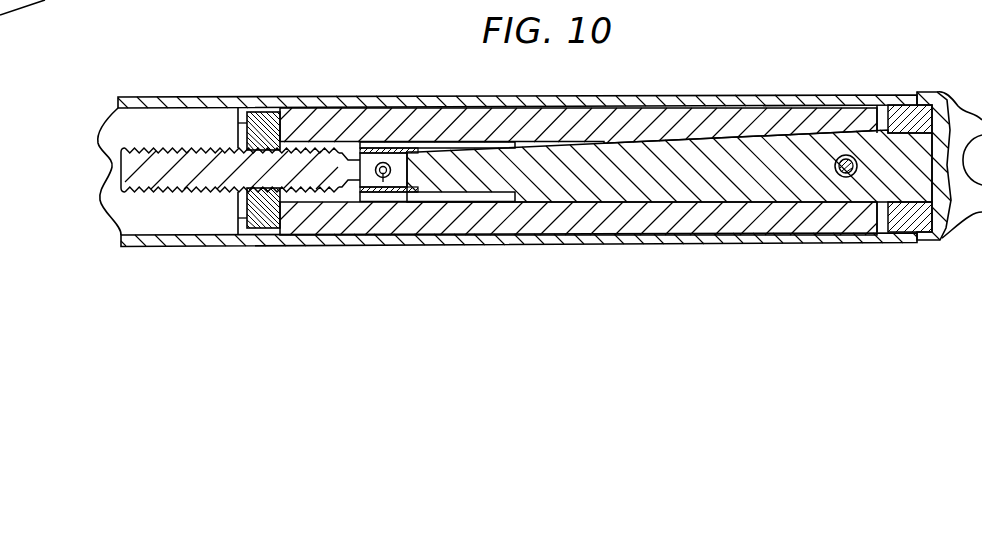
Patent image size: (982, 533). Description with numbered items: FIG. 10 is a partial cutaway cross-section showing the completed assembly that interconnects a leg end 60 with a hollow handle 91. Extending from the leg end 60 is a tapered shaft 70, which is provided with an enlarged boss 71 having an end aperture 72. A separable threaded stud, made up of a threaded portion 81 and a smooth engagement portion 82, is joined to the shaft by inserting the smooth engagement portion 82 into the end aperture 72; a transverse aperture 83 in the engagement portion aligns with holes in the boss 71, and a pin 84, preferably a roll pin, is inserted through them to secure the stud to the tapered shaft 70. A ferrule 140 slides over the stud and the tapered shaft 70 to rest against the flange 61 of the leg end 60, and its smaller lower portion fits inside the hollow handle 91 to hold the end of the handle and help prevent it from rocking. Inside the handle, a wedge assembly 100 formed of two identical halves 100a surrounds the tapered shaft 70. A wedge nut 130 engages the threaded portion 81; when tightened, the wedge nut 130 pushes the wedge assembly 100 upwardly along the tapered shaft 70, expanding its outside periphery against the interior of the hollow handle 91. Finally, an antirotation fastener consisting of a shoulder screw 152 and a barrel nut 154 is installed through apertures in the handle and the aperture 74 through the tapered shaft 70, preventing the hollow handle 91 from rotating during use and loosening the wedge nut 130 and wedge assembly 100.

The wedge assembly 100 is at (75, 0).
The half of the wedge assembly 100a is at (581, 106).
The hollow handle 91 is at (157, 122).
The threaded portion 81 is at (197, 170).
The wedge nut 130 is at (265, 213).
The smooth engagement portion 82 is at (377, 164).
The transverse aperture 83 is at (392, 165).
The pin 84 is at (403, 178).
The enlarged boss 71 is at (383, 198).
The end aperture 72 is at (353, 146).
The tapered shaft 70 is at (687, 182).
The aperture 74 is at (838, 183).
The shoulder screw 152 is at (849, 158).
The barrel nut 154 is at (843, 156).
The ferrule 140 is at (925, 93).
The flange 61 is at (947, 107).
The leg end 60 is at (978, 214).